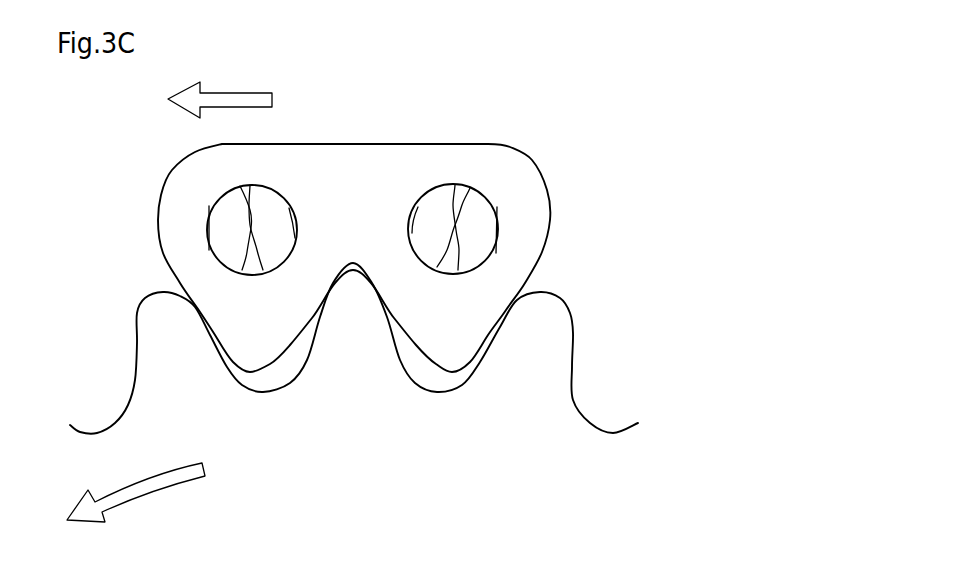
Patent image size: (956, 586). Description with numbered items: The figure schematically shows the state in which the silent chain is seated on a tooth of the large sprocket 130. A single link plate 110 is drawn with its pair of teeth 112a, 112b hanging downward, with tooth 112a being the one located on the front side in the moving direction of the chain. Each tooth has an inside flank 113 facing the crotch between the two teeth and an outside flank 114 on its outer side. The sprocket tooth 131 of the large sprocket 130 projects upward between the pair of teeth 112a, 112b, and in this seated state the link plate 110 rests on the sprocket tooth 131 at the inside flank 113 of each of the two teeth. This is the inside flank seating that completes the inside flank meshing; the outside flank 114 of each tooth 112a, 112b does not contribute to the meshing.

The link plate 110 is at (517, 143).
The tooth 112a is at (237, 350).
The tooth 112b is at (450, 353).
The inside flank 113 is at (313, 347).
The outside flank 114 is at (213, 342).
The large sprocket 130 is at (574, 304).
The sprocket tooth 131 is at (358, 280).